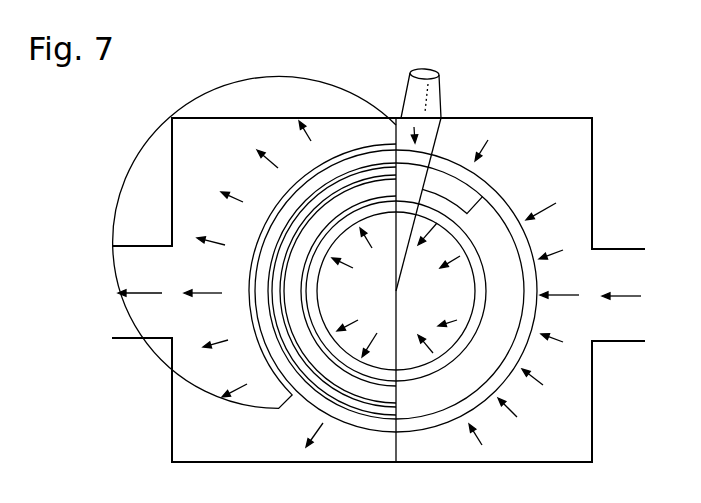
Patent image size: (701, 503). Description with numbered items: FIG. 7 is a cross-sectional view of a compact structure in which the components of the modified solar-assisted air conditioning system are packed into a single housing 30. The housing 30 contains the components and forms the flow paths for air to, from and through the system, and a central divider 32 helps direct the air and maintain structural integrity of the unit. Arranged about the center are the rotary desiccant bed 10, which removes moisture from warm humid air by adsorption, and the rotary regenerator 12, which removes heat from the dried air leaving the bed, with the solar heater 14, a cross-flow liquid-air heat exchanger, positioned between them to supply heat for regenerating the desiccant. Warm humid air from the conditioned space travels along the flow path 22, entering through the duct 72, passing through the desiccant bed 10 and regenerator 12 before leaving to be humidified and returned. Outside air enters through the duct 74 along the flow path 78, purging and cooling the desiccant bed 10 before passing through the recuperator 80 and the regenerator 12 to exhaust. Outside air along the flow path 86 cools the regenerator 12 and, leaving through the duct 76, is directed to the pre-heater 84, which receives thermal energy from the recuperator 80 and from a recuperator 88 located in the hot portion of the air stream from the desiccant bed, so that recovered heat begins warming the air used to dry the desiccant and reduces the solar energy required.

The rotary desiccant bed 10 is at (345, 418).
The rotary regenerator 12 is at (481, 306).
The solar heater 14 is at (303, 212).
The flow path 22 is at (622, 282).
The housing 30 is at (172, 183).
The divider 32 is at (398, 338).
The duct 72 is at (612, 250).
The duct 74 is at (441, 79).
The duct 76 is at (133, 245).
The flow path 78 is at (399, 120).
The recuperator 80 is at (444, 181).
The pre-heater 84 is at (308, 332).
The flow path 86 is at (181, 282).
The recuperator 88 is at (242, 311).